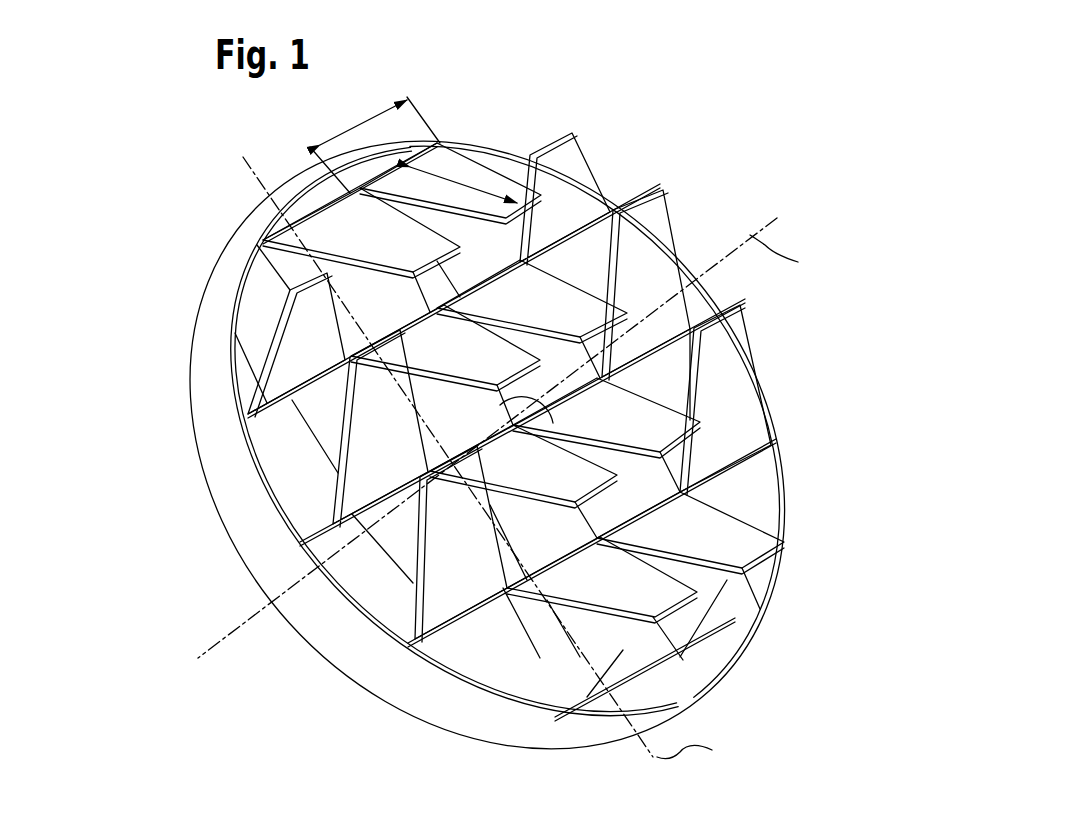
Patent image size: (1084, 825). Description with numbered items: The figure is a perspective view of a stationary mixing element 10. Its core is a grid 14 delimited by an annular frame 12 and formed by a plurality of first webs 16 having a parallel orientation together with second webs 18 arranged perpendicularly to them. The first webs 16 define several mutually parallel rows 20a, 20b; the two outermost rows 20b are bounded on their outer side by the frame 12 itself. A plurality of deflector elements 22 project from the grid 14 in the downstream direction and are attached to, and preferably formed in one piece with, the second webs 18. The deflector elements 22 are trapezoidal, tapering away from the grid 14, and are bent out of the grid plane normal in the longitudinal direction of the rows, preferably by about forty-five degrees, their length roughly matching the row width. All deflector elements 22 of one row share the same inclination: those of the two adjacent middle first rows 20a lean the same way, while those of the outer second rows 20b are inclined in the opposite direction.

The stationary mixing element 10 is at (684, 140).
The annular frame 12 is at (212, 357).
The grid 14 is at (528, 680).
The first webs 16 is at (325, 412).
The second webs 18 is at (410, 645).
The first rows 20a is at (570, 660).
The second rows 20b is at (450, 656).
The deflector elements 22 is at (488, 178).